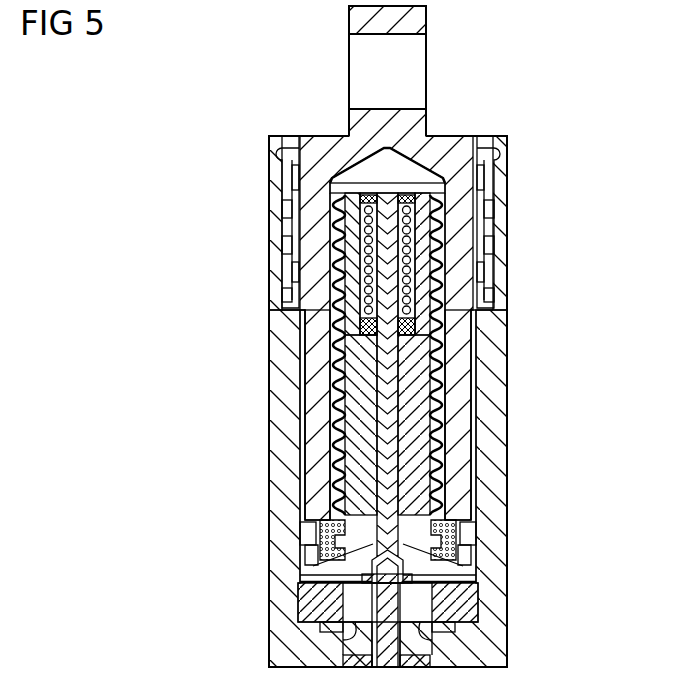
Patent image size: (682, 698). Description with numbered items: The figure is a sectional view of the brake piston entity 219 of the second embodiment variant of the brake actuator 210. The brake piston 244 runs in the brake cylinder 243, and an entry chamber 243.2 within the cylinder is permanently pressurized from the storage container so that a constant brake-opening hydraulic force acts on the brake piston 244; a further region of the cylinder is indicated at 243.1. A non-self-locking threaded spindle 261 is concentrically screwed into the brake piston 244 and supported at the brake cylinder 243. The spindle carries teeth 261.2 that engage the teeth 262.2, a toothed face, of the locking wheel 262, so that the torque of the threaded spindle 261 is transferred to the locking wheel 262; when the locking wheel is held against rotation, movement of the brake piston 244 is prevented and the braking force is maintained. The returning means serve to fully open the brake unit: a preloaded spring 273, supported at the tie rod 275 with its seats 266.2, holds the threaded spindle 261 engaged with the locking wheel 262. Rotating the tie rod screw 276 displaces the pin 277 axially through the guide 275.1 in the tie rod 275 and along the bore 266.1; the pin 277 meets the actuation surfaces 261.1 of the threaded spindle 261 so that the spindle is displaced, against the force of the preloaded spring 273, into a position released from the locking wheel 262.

The brake actuator 210 is at (493, 97).
The brake piston entity 219 is at (387, 71).
The brake cylinder 243 is at (490, 334).
The housing shoulder 243.1 is at (465, 578).
The entry chamber 243.2 is at (473, 372).
The brake piston 244 is at (463, 245).
The threaded spindle 261 is at (412, 432).
The actuation surfaces 261.1 is at (330, 547).
The teeth 261.2 is at (443, 627).
The locking wheel 262 is at (466, 600).
The teeth 262.2 is at (300, 598).
The bore 266.1 is at (448, 632).
The spring seat 266.2 is at (365, 333).
The preloaded spring 273 is at (362, 282).
The tie rod 275 is at (387, 398).
The guide 275.1 is at (400, 550).
The tie rod screw 276 is at (387, 637).
The pin 277 is at (358, 580).